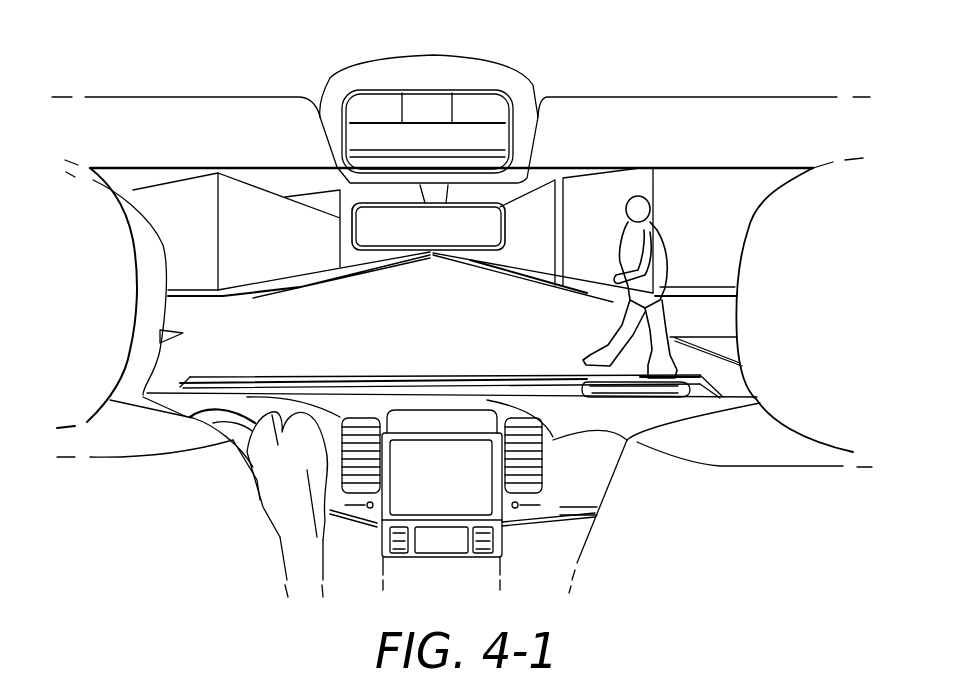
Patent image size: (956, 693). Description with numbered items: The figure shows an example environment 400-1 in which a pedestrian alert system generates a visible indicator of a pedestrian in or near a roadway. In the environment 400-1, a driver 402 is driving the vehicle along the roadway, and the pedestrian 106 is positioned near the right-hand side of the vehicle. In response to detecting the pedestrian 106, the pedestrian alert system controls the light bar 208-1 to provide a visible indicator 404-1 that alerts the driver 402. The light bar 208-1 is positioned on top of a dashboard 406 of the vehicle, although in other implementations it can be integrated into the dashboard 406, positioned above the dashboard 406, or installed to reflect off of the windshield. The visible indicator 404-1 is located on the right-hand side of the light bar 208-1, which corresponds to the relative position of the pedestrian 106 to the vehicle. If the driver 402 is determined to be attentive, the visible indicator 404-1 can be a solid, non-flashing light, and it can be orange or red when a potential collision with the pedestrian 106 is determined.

The environment 400-1 is at (148, 27).
The driver 402 is at (125, 188).
The pedestrian 106 is at (658, 237).
The light bar 208-1 is at (390, 387).
The visible indicator 404-1 is at (587, 387).
The dashboard 406 is at (600, 427).